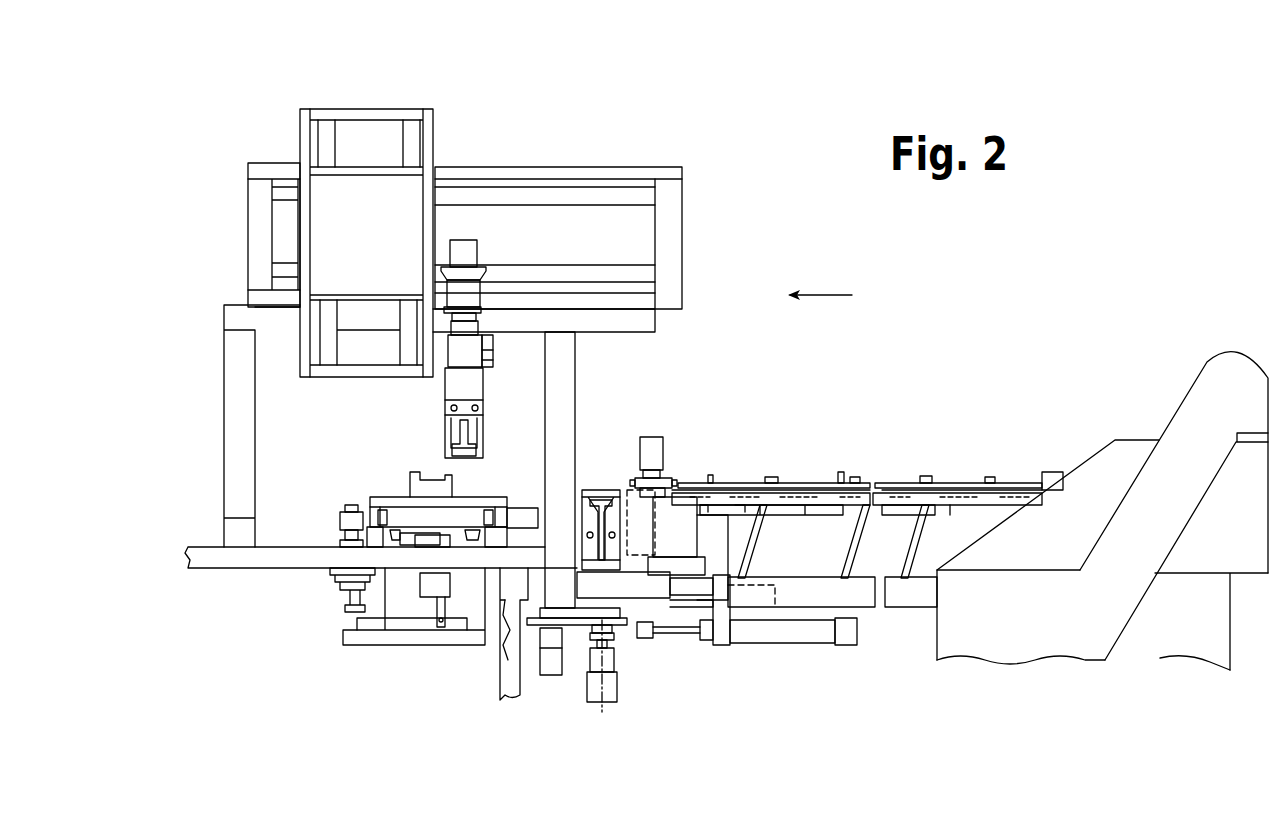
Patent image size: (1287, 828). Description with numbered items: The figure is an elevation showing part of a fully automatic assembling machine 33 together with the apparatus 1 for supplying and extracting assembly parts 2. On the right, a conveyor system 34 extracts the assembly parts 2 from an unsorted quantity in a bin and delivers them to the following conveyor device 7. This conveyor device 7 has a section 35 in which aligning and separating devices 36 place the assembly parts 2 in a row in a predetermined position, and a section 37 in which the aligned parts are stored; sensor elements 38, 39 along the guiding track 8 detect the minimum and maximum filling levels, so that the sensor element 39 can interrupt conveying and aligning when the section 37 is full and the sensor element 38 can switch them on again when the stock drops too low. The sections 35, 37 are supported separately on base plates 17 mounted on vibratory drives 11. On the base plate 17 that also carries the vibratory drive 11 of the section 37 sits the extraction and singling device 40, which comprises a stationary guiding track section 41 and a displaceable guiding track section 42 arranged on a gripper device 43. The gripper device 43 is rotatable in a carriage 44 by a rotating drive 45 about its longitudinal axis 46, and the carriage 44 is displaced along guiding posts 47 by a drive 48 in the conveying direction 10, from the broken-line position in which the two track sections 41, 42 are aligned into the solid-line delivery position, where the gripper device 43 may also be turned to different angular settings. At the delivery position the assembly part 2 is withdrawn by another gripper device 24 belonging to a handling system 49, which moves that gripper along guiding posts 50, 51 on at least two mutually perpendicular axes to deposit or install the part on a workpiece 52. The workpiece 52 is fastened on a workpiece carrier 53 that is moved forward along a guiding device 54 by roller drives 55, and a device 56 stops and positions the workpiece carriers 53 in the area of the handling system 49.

The apparatus 1 is at (1010, 288).
The assembly parts 2 is at (472, 460).
The conveyor device 7 is at (868, 452).
The guiding track 8 is at (758, 482).
The conveying direction 10 is at (823, 292).
The vibratory drives 11 is at (853, 567).
The base plates 17 is at (810, 595).
The gripper device 24 is at (500, 405).
The assembling machine 33 is at (240, 200).
The conveyor system 34 is at (1228, 360).
The section 35 is at (985, 470).
The aligning and separating devices 36 is at (1052, 476).
The section 37 is at (803, 476).
The sensor element 38 is at (712, 480).
The sensor element 39 is at (842, 477).
The extraction and singling device 40 is at (670, 430).
The stationary guiding track section 41 is at (674, 476).
The displaceable guiding track section 42 is at (588, 484).
The gripper device 43 is at (571, 508).
The carriage 44 is at (658, 608).
The rotating drive 45 is at (547, 678).
The longitudinal axis 46 is at (606, 705).
The guiding posts 47 is at (708, 603).
The drive 48 is at (767, 633).
The handling system 49 is at (460, 145).
The guiding post 50 is at (540, 205).
The guiding post 51 is at (333, 143).
The workpiece 52 is at (418, 492).
The workpiece carrier 53 is at (383, 497).
The guiding device 54 is at (408, 546).
The roller drives 55 is at (340, 518).
The device 56 is at (450, 583).